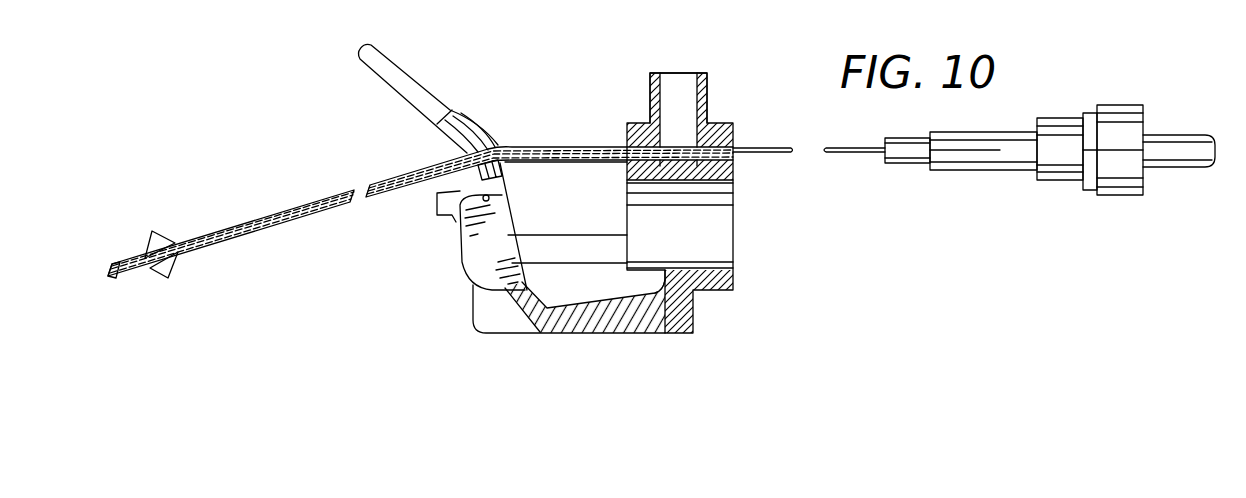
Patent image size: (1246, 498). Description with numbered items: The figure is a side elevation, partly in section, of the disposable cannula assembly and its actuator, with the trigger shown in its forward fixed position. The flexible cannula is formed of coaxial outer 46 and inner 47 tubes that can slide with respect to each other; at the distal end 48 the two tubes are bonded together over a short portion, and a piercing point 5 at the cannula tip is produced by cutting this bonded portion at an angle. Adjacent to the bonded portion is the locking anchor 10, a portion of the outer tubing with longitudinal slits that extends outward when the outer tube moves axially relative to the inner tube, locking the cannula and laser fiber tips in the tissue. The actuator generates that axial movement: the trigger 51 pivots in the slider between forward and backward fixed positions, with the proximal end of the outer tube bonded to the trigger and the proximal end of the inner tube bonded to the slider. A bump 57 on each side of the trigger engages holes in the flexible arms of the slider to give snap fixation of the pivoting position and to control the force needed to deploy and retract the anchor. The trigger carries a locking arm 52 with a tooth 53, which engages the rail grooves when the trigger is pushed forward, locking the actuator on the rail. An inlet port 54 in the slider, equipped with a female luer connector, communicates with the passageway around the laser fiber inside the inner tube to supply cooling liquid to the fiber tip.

The piercing point 5 is at (113, 277).
The locking anchor 10 is at (163, 246).
The outer tube 46 is at (532, 150).
The inner tube 47 is at (770, 150).
The distal end 48 is at (118, 262).
The trigger 51 is at (400, 65).
The locking arm 52 is at (572, 322).
The tooth 53 is at (655, 275).
The inlet port 54 is at (655, 74).
The bump 57 is at (455, 220).